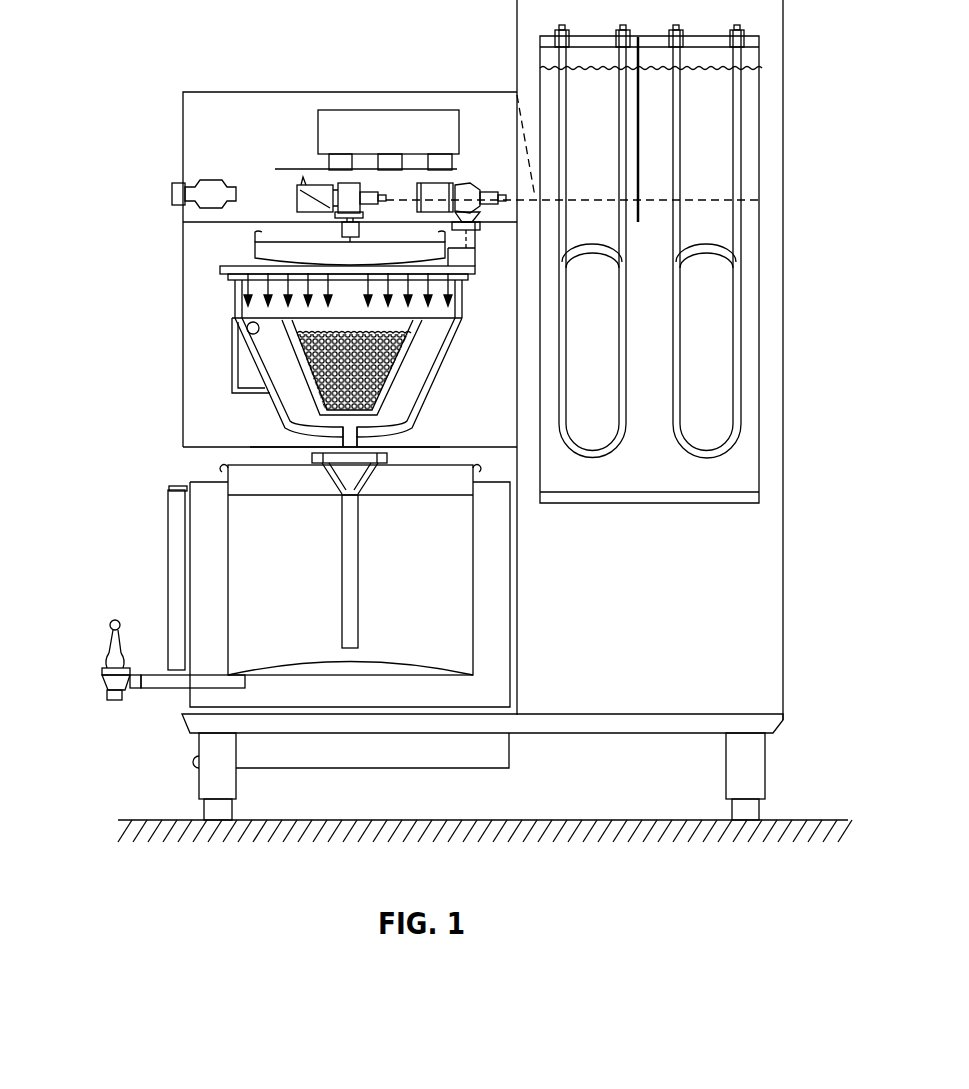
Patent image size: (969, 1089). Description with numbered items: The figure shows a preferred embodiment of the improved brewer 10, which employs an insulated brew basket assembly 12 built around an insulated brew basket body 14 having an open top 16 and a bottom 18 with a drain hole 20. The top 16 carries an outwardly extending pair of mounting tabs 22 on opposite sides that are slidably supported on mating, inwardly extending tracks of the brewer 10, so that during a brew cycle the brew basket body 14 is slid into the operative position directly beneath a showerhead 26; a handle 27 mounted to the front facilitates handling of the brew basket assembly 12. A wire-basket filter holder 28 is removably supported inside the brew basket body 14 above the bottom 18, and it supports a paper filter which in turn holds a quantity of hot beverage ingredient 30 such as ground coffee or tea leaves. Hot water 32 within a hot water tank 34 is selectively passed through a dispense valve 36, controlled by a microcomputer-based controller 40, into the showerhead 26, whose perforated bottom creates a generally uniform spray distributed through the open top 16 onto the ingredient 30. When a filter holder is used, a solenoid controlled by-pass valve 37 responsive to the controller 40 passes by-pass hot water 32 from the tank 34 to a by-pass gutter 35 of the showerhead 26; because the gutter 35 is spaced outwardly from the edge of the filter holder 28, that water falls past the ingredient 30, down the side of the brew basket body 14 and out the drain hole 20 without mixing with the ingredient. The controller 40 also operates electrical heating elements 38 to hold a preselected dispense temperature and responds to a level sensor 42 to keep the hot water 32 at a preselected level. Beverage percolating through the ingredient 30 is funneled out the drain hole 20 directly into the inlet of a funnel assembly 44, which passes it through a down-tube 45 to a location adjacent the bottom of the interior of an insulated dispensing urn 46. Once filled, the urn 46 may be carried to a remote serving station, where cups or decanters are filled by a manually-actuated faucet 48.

The brewer 10 is at (256, 106).
The insulated brew basket assembly 12 is at (196, 367).
The insulated brew basket body 14 is at (438, 377).
The open top 16 is at (358, 280).
The bottom 18 is at (253, 448).
The drain hole 20 is at (335, 467).
The mounting tabs 22 is at (232, 282).
The showerhead 26 is at (267, 258).
The handle 27 is at (302, 386).
The wire-basket filter holder 28 is at (233, 320).
The hot beverage ingredient 30 is at (340, 432).
The hot water 32 is at (754, 68).
The hot water tank 34 is at (783, 98).
The by-pass gutter 35 is at (224, 262).
The dispense valve 36 is at (297, 193).
The by-pass valve 37 is at (472, 185).
The electrical heating elements 38 is at (741, 357).
The microcomputer-based controller 40 is at (367, 114).
The level sensor 42 is at (640, 165).
The funnel assembly 44 is at (353, 475).
The down-tube 45 is at (352, 615).
The insulated dispensing urn 46 is at (240, 605).
The faucet 48 is at (105, 657).